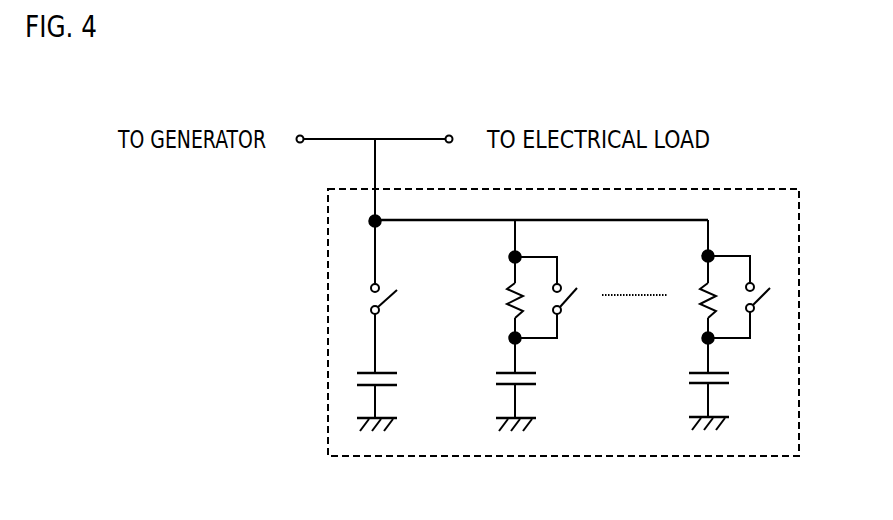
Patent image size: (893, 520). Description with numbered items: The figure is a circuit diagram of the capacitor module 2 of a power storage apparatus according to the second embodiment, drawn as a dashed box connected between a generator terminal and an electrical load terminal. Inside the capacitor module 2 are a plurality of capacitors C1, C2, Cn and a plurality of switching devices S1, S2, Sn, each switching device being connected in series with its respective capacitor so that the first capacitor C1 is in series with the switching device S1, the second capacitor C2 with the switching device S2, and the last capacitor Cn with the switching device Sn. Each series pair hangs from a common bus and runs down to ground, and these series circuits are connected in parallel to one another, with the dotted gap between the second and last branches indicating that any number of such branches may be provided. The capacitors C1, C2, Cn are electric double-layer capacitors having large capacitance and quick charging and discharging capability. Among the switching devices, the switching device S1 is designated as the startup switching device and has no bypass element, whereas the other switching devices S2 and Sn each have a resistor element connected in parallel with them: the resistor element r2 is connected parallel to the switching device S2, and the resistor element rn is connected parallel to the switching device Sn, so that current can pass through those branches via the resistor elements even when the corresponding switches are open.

The capacitor module 2 is at (273, 263).
The switching device S1 is at (409, 267).
The switching device S2 is at (574, 287).
The switching device Sn is at (746, 274).
The capacitor C1 is at (401, 380).
The capacitor C2 is at (543, 392).
The capacitor Cn is at (735, 392).
The resistor element r2 is at (490, 303).
The resistor element rn is at (681, 303).